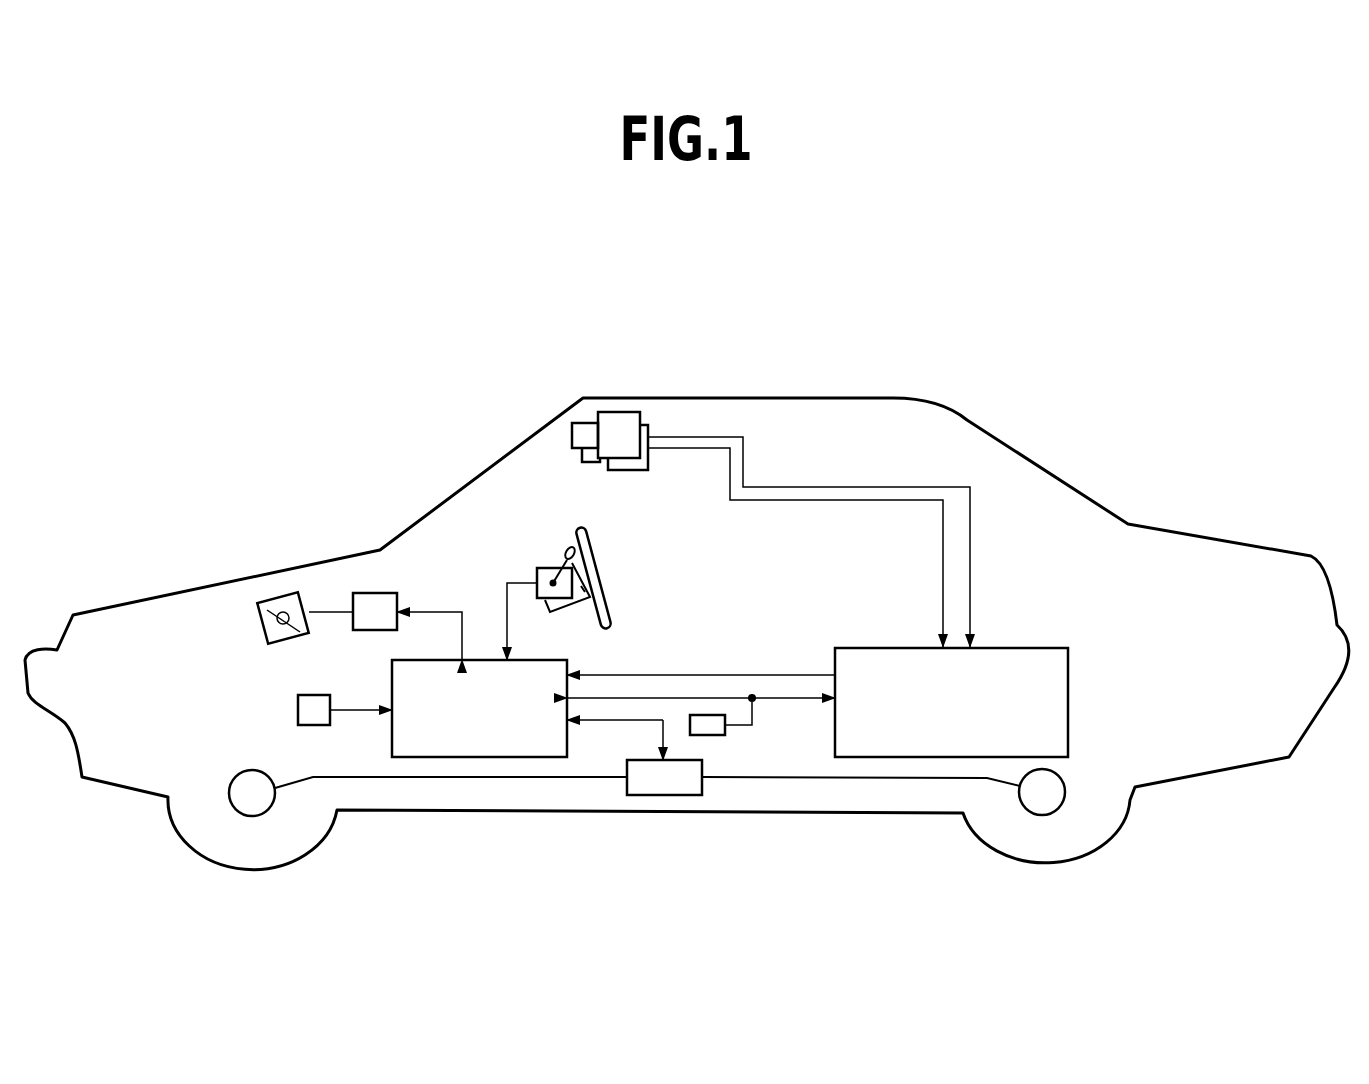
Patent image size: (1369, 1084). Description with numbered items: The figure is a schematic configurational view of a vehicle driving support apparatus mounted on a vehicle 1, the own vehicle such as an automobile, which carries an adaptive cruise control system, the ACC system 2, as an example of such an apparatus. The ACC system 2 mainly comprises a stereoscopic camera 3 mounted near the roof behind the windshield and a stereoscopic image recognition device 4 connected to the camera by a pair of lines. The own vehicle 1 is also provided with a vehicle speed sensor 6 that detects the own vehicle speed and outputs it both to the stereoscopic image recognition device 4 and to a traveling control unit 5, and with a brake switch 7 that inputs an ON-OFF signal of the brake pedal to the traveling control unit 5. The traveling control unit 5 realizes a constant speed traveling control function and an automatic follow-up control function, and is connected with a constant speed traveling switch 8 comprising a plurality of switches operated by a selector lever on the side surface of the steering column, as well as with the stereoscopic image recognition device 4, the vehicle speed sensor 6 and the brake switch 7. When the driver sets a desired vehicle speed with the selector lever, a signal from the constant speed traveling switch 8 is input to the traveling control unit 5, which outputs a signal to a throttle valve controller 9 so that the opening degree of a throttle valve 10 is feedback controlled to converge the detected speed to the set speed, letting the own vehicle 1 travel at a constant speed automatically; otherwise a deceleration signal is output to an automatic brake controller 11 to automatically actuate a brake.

The vehicle 1 is at (1052, 429).
The ACC system 2 is at (1052, 627).
The stereoscopic camera 3 is at (638, 483).
The stereoscopic image recognition device 4 is at (1068, 688).
The traveling control unit 5 is at (495, 758).
The vehicle speed sensor 6 is at (727, 730).
The brake switch 7 is at (298, 711).
The constant speed traveling switch 8 is at (548, 568).
The throttle valve controller 9 is at (377, 593).
The throttle valve 10 is at (283, 595).
The automatic brake controller 11 is at (655, 797).